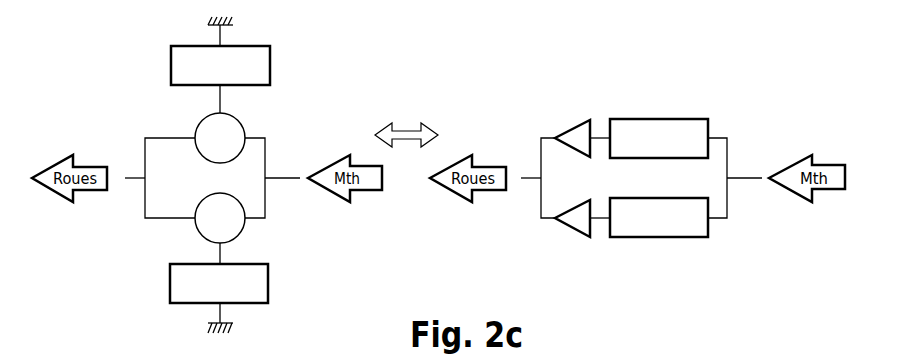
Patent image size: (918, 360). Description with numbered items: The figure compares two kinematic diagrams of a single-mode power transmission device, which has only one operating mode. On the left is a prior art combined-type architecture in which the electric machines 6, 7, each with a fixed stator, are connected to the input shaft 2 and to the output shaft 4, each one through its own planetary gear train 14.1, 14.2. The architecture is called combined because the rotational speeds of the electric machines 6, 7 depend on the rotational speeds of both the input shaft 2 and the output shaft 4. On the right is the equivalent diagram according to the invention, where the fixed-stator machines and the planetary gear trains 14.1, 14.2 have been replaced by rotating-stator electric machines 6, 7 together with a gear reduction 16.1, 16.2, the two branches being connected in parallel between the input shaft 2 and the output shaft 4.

The electric machine 7 is at (171, 67).
The electric machine 6 is at (170, 282).
The planetary gear train 14.1 is at (245, 121).
The planetary gear train 14.2 is at (243, 232).
The output shaft 4 is at (135, 178).
The input shaft 2 is at (282, 178).
The gear reduction 16.1 is at (573, 128).
The gear reduction 16.2 is at (573, 228).